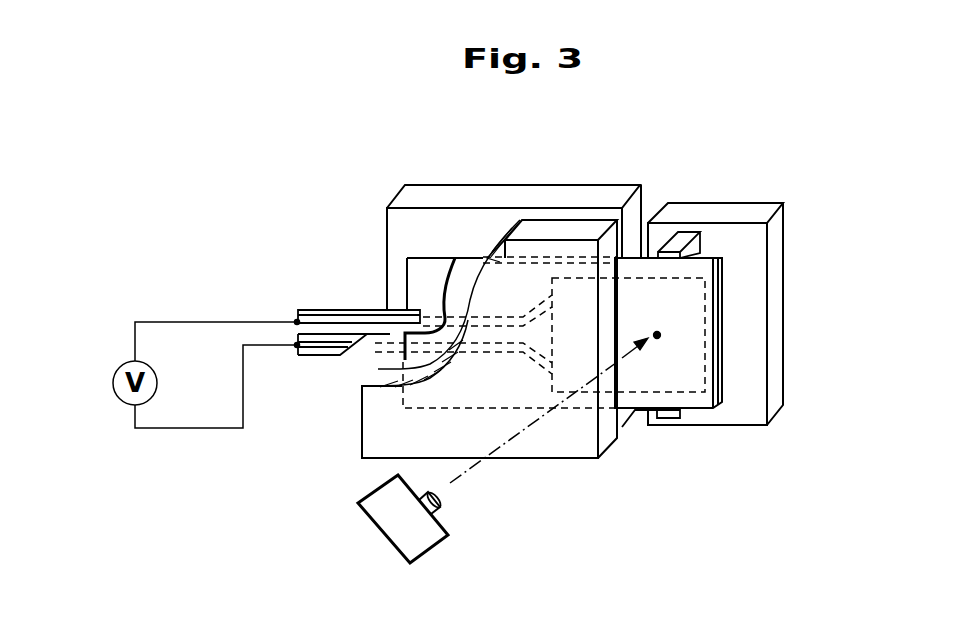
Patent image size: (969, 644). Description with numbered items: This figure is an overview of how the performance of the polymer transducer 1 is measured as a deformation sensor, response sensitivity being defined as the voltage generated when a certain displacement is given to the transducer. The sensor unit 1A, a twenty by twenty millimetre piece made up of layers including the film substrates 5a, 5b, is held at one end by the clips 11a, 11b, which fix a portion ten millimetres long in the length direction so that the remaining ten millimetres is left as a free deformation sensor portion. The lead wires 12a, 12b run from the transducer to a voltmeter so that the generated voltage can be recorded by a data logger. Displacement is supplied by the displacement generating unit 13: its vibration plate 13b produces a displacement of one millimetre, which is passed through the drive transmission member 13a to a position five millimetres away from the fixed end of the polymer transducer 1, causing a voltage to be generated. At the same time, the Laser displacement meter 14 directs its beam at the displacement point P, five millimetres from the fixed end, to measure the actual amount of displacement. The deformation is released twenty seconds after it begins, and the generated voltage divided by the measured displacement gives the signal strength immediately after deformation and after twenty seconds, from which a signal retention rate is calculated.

The polymer transducer 1 is at (720, 377).
The sensor unit 1A is at (640, 362).
The film substrate 5a is at (417, 291).
The film substrate 5b is at (680, 398).
The clip 11a is at (422, 198).
The clip 11b is at (538, 230).
The lead wire 12a is at (362, 316).
The lead wire 12b is at (370, 353).
The displacement generating unit 13 is at (842, 153).
The drive transmission member 13a is at (681, 238).
The vibration plate 13b is at (752, 217).
The Laser displacement meter 14 is at (402, 535).
The displacement point P is at (657, 335).